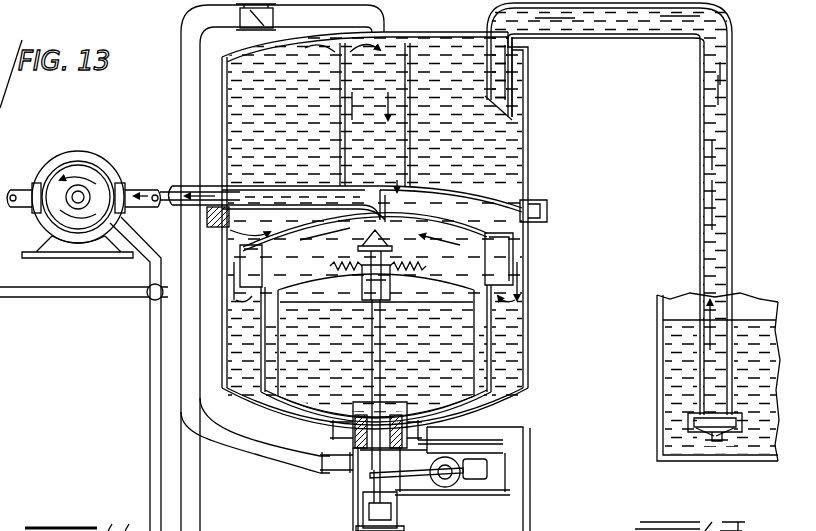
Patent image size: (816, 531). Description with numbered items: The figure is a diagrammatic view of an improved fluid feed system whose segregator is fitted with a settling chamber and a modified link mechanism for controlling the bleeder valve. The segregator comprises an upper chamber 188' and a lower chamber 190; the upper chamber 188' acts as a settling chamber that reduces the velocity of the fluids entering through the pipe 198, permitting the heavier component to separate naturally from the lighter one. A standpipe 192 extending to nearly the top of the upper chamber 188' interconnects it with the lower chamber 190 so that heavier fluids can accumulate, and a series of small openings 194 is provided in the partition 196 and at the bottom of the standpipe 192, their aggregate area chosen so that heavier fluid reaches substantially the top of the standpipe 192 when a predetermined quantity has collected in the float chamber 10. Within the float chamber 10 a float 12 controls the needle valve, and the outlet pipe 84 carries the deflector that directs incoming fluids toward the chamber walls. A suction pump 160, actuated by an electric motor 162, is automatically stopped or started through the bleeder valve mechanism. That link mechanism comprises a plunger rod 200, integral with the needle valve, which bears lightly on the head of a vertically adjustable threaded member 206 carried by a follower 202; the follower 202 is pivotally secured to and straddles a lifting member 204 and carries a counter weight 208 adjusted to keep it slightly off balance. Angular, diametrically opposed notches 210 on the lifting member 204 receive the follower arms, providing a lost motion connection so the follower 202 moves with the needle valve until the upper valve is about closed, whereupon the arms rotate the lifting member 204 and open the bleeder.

The float chamber 10 is at (528, 351).
The float 12 is at (477, 357).
The outlet pipe 84 is at (235, 195).
The suction pump 160 is at (73, 172).
The electric motor 162 is at (75, 245).
The upper chamber 188' is at (551, 101).
The lower chamber 190 is at (510, 342).
The standpipe 192 is at (357, 114).
The small openings 194 is at (400, 186).
The partition 196 is at (480, 190).
The pipe 198 is at (578, 36).
The plunger rod 200 is at (375, 458).
The follower 202 is at (392, 497).
The lifting member 204 is at (460, 490).
The threaded member 206 is at (360, 478).
The counter weight 208 is at (478, 468).
The notches 210 is at (465, 488).